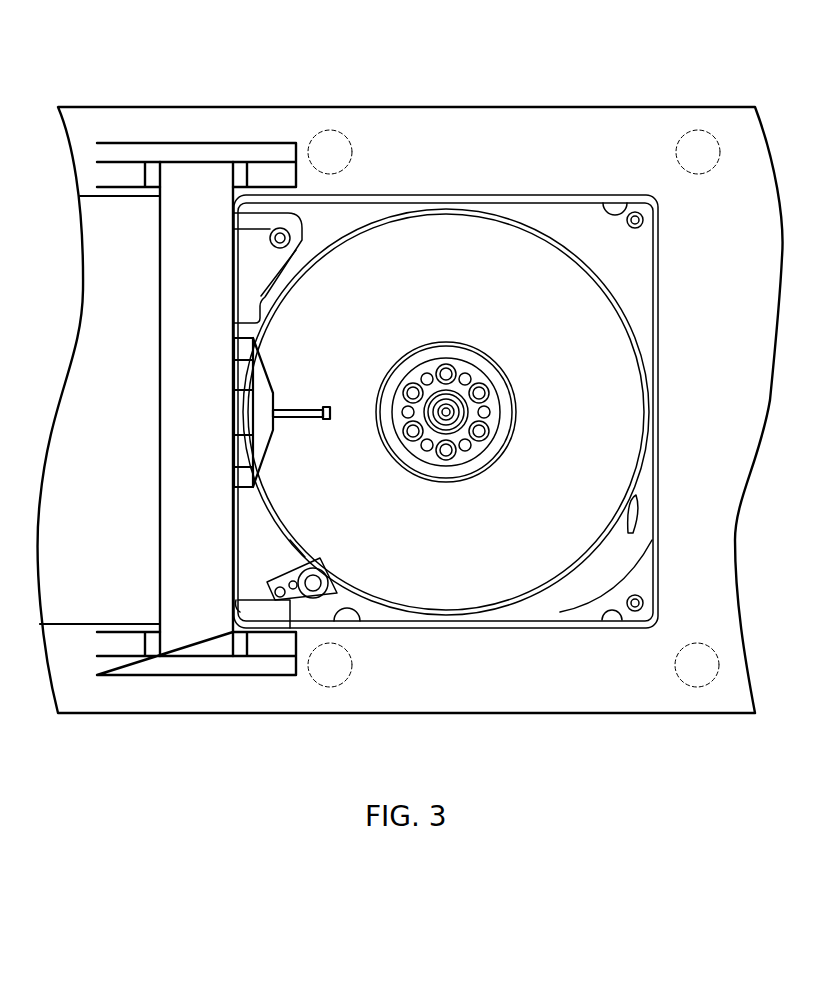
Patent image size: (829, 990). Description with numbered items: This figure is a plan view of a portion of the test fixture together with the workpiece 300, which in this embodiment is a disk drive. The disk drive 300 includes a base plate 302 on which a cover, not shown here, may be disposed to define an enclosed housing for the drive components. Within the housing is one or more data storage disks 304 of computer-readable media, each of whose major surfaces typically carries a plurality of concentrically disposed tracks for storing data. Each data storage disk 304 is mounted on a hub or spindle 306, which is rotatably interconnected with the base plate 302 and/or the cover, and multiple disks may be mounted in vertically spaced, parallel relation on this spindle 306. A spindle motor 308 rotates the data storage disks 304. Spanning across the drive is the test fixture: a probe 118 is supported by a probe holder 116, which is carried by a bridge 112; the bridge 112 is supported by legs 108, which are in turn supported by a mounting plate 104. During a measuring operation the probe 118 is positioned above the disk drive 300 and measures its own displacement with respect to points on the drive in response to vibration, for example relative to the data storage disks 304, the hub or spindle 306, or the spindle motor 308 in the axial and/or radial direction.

The mounting plate 104 is at (90, 128).
The legs 108 is at (127, 172).
The bridge 112 is at (197, 207).
The probe holder 116 is at (243, 408).
The probe 118 is at (323, 406).
The workpiece 300 is at (500, 394).
The base plate 302 is at (523, 195).
The data storage disks 304 is at (433, 237).
The hub or spindle 306 is at (423, 345).
The spindle motor 308 is at (462, 396).